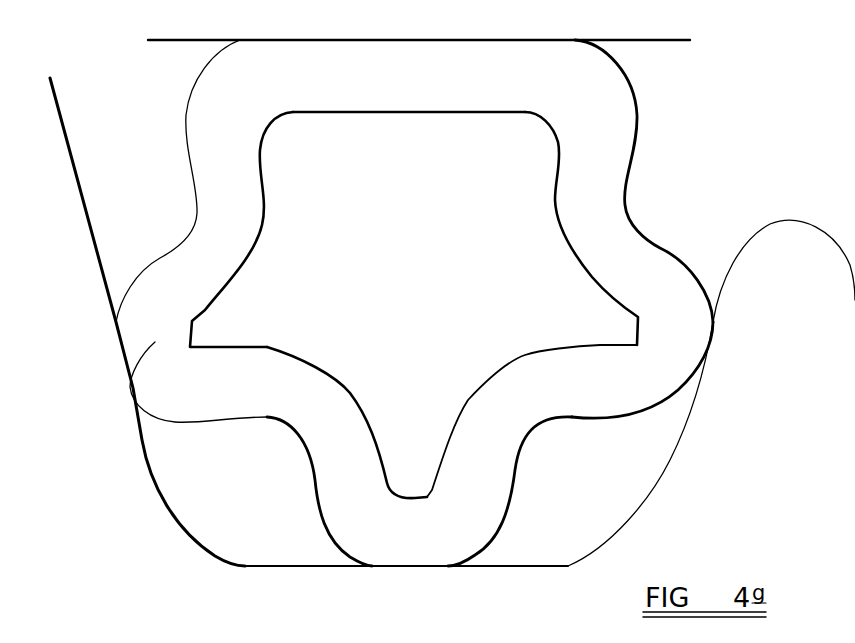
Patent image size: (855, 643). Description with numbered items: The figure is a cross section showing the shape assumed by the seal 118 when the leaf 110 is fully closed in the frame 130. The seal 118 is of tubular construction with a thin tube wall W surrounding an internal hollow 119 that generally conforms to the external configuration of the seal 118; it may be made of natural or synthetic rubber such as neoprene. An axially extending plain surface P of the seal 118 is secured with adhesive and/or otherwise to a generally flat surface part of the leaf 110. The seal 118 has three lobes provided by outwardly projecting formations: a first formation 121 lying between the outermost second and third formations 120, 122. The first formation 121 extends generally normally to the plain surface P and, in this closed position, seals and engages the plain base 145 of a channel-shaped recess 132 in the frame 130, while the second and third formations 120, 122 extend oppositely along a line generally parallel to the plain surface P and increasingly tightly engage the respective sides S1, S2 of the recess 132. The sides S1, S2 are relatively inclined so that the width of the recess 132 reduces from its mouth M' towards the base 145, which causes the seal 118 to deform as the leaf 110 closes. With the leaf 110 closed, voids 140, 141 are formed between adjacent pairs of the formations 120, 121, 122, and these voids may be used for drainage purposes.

The leaf 110 is at (672, 40).
The seal 118 is at (661, 244).
The channel-shaped recess 132 is at (707, 253).
The second outwardly extending formation 120 is at (672, 330).
The frame 130 is at (698, 444).
The internal hollow 119 is at (414, 305).
The first outwardly projecting formation 121 is at (390, 527).
The third outwardly extending formation 122 is at (132, 387).
The void 140 is at (582, 510).
The void 141 is at (237, 488).
The plain base 145 is at (505, 567).
The axially extending plain surface P is at (370, 42).
The tube wall W is at (378, 467).
The mouth M' is at (136, 303).
The side S1 is at (668, 477).
The side S2 is at (148, 464).